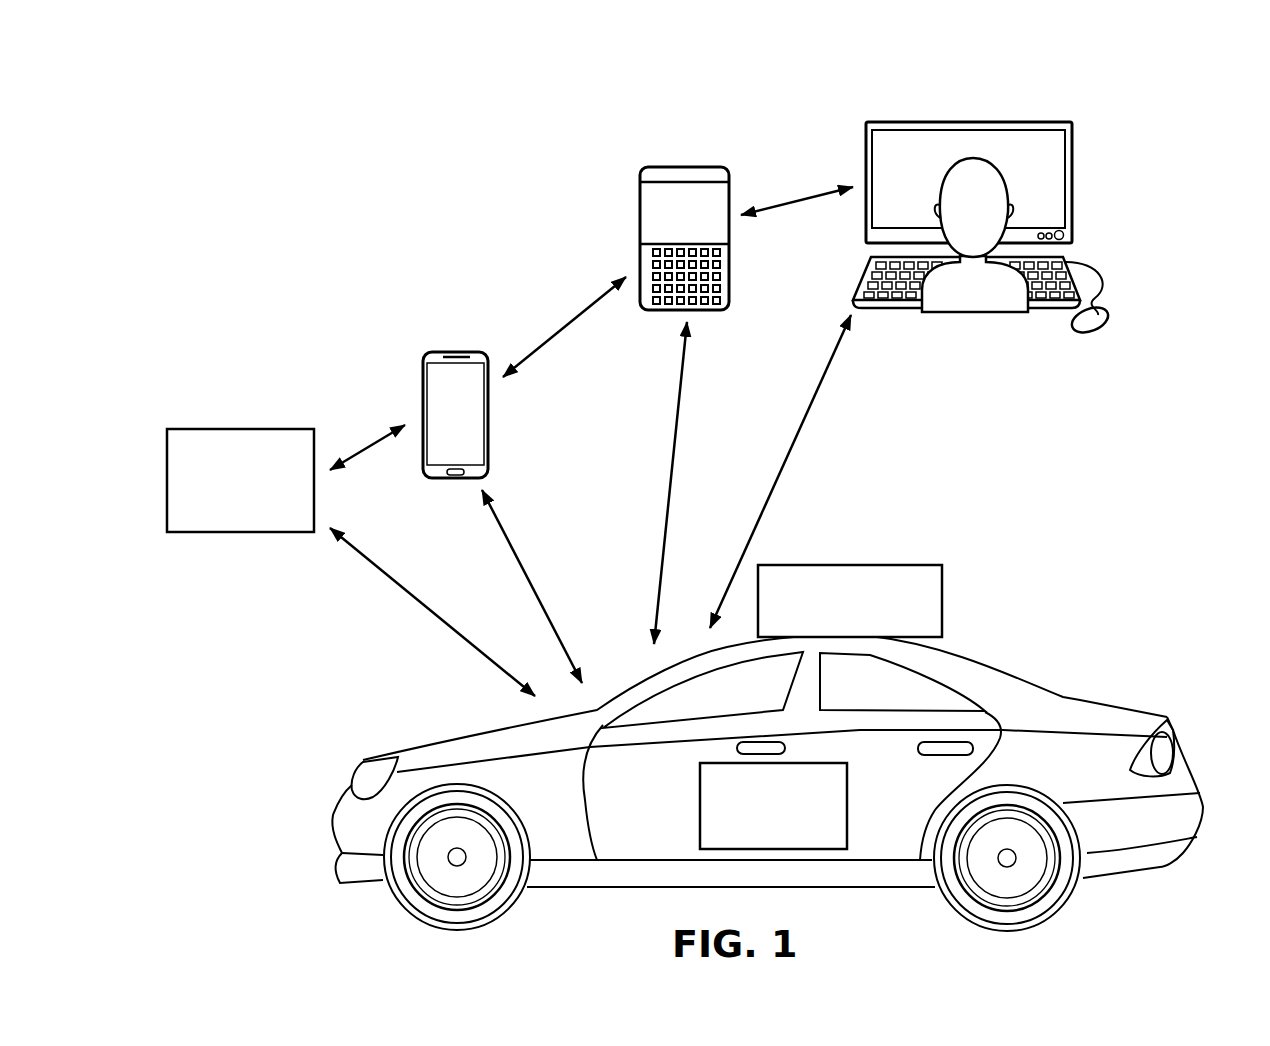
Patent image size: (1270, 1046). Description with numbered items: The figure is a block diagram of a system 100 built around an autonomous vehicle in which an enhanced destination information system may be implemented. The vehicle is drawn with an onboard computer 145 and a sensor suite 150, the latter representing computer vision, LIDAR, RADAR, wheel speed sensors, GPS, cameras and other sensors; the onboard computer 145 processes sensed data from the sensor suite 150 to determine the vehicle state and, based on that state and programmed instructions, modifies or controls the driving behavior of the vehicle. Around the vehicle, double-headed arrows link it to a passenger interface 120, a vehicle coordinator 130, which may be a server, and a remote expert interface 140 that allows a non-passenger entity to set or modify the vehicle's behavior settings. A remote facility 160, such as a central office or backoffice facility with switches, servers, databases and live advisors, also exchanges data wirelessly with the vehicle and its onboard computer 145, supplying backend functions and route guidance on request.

The system 100 is at (1175, 116).
The passenger interface 120 is at (440, 352).
The vehicle coordinator 130 is at (668, 167).
The remote expert interface 140 is at (897, 122).
The onboard computer 145 is at (773, 806).
The sensor suite 150 is at (850, 601).
The remote facility 160 is at (240, 480).